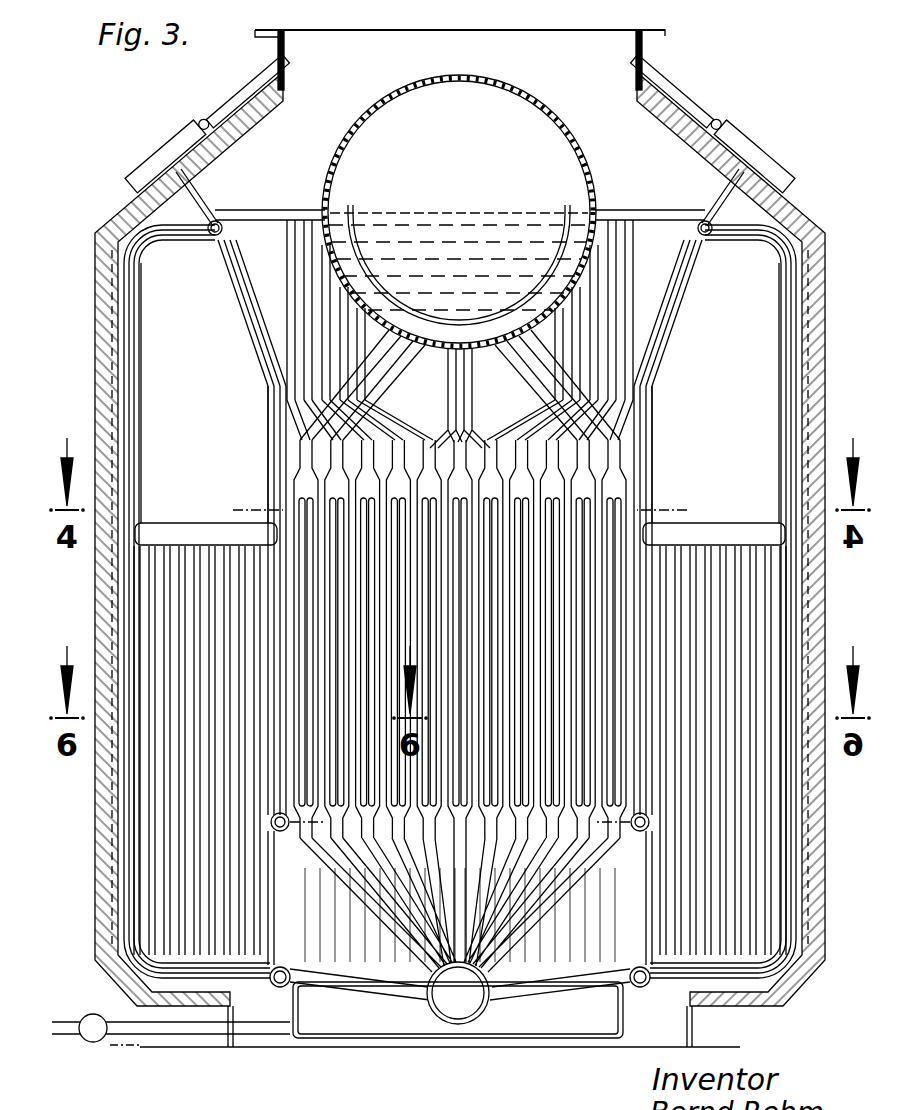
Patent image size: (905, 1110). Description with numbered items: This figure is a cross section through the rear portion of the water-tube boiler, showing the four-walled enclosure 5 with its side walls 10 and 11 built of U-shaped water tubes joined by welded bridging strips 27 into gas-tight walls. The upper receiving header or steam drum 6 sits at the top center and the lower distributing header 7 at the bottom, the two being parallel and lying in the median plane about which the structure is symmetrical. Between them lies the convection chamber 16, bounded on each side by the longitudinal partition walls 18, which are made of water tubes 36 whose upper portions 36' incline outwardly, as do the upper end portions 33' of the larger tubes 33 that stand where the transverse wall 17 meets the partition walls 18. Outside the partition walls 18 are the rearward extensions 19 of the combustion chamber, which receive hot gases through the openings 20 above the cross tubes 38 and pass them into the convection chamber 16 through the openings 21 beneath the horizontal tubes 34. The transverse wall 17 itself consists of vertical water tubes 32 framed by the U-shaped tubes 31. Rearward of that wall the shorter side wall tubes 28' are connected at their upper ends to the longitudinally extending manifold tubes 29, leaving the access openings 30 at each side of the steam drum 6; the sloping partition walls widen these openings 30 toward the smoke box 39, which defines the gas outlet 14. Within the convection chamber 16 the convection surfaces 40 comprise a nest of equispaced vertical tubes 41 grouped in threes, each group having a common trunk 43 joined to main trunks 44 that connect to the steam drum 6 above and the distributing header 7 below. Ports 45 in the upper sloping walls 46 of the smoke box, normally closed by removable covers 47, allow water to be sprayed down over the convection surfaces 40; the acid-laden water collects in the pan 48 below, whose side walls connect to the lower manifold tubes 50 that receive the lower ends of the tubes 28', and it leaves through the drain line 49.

The four-walled enclosure 5 is at (796, 160).
The upper receiving header 6 is at (572, 128).
The lower distributing header 7 is at (478, 1022).
The side wall 10 is at (800, 690).
The side wall 11 is at (112, 352).
The outlet 14 is at (552, 68).
The convection chamber 16 is at (578, 550).
The transversely extending wall 17 is at (742, 760).
The vertical walls 18 is at (265, 578).
The rearward extensions of the combustion chamber 19 is at (168, 374).
The openings 20 is at (268, 402).
The openings 21 is at (284, 888).
The bridging strips 27 is at (262, 264).
The shorter U-shaped side wall-forming tubes 28' is at (460, 601).
The longitudinally extending manifold tubes 29 is at (214, 220).
The openings 30 is at (262, 208).
The U-shaped tubes 31 is at (141, 346).
The vertical water tubes 32 is at (308, 225).
The larger diameter vertically disposed tubes 33 is at (463, 362).
The upper end portions of the tubes 33 33' is at (458, 313).
The horizontally disposed tubes 34 is at (290, 834).
The water tubes 36 is at (462, 527).
The upper portions of the tubes 36 36' is at (474, 313).
The cross tubes 38 is at (180, 530).
The smoke box 39 is at (437, 46).
The convection surfaces 40 is at (484, 482).
The vertically extending equispaced tubes 41 is at (436, 482).
The common trunk 43 is at (318, 448).
The main trunks 44 is at (525, 366).
The ports 45 is at (208, 112).
The upper sloping walls 46 is at (240, 96).
The removable covers 47 is at (160, 152).
The pan 48 is at (340, 1042).
The drain line 49 is at (167, 1042).
The longitudinally extending manifold tubes 50 is at (296, 986).